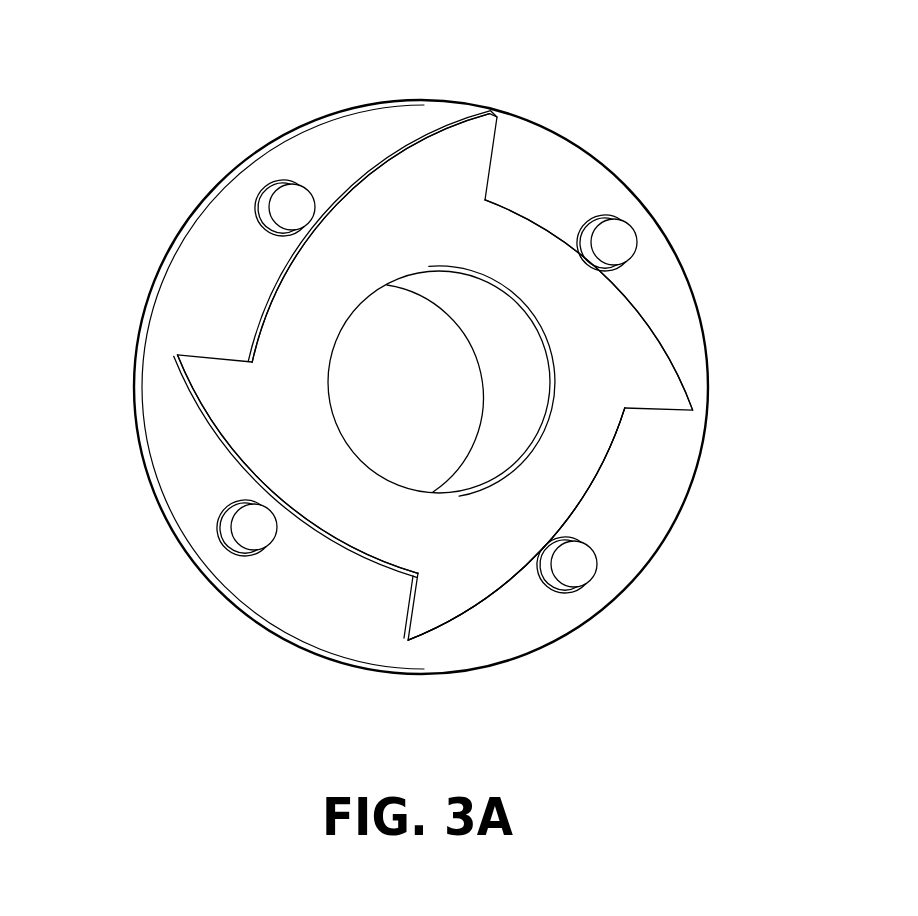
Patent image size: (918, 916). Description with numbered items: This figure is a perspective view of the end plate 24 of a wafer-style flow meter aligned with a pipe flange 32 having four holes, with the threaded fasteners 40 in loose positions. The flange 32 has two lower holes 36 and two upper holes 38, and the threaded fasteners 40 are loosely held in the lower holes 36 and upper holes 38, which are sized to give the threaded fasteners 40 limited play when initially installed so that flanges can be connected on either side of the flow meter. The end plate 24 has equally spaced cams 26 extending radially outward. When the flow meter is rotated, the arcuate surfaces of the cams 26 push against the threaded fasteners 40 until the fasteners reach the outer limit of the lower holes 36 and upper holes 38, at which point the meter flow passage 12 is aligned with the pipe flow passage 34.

The meter flow passage 12 is at (553, 380).
The end plate 24 is at (607, 457).
The cams 26 is at (443, 121).
The flange 32 is at (582, 143).
The pipe flow passage 34 is at (503, 360).
The lower holes 36 is at (225, 543).
The upper holes 38 is at (258, 193).
The threaded fasteners 40 is at (267, 223).